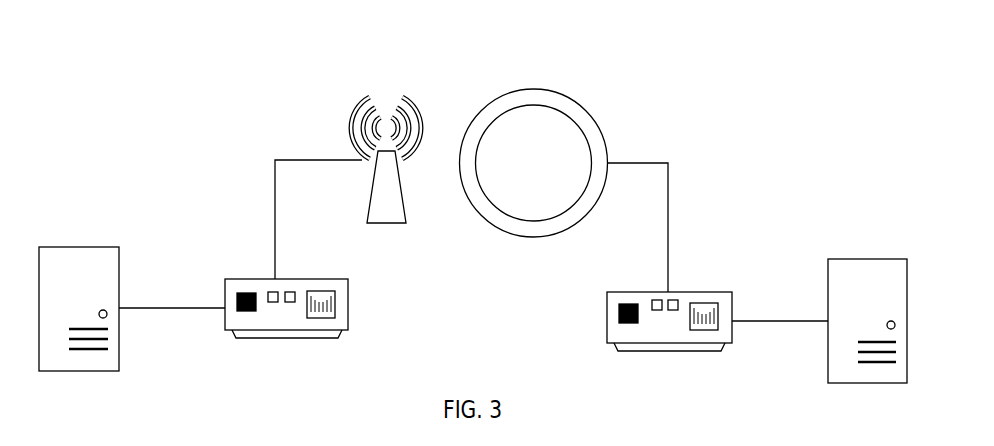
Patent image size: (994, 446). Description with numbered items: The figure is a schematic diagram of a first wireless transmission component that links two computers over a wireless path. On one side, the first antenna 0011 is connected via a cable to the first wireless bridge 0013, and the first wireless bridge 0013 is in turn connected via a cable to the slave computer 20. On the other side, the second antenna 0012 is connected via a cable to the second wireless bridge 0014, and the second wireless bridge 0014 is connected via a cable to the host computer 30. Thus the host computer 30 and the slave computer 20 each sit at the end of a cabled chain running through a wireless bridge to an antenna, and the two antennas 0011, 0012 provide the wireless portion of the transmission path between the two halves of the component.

The host computer 30 is at (82, 244).
The second wireless bridge 0014 is at (249, 277).
The second antenna 0012 is at (420, 101).
The first antenna 0011 is at (574, 96).
The first wireless bridge 0013 is at (698, 289).
The slave computer 20 is at (839, 256).